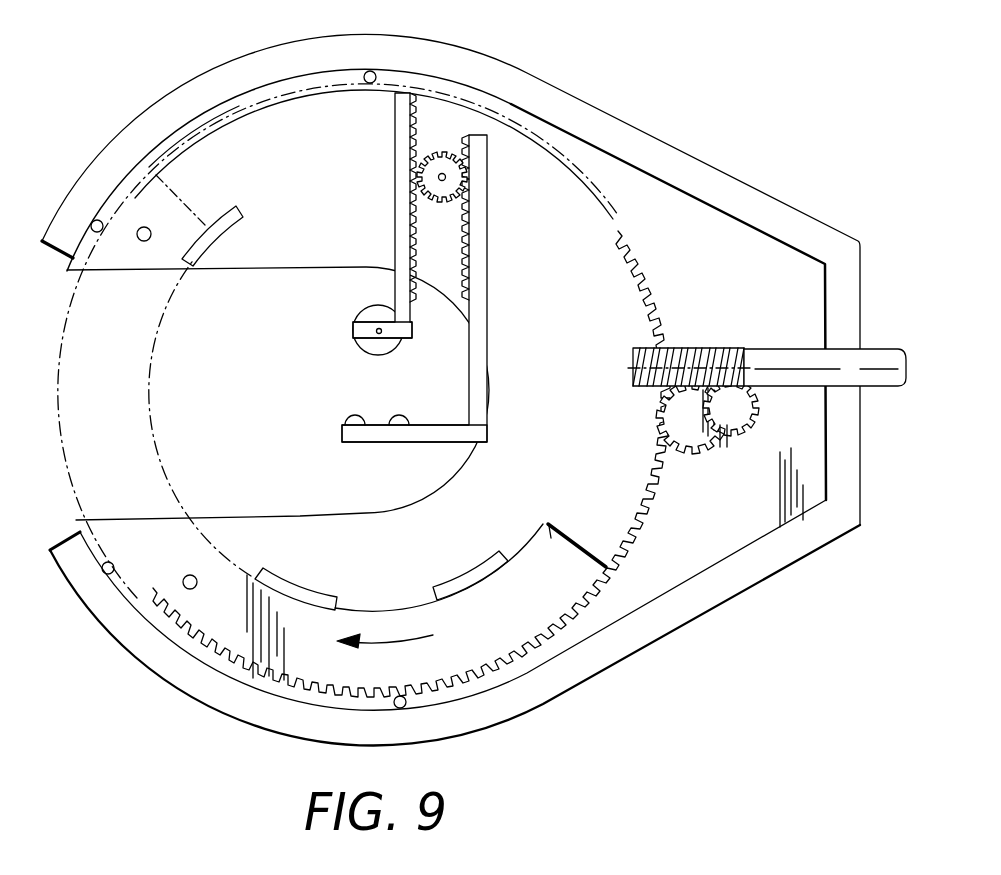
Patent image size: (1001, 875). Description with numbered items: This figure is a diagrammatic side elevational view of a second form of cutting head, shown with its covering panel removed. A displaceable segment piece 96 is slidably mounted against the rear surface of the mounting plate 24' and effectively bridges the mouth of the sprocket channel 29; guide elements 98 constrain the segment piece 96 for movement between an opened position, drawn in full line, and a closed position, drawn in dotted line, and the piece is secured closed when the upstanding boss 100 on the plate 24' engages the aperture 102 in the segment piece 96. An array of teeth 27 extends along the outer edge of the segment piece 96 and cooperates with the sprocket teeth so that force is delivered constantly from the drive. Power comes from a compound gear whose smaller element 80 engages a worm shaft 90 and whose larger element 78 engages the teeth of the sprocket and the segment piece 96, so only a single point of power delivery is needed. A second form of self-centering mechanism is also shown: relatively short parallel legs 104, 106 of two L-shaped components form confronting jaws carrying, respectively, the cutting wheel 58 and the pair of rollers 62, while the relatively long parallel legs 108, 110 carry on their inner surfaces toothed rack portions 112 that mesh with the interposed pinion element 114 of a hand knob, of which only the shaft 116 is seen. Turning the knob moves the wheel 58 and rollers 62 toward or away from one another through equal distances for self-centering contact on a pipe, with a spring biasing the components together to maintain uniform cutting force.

The mounting plate 24' is at (338, 331).
The array of teeth 27 is at (546, 638).
The sprocket channel 29 is at (276, 282).
The cutting wheel 58 is at (387, 352).
The rollers 62 is at (354, 413).
The larger element of compound gear 78 is at (750, 426).
The smaller element of compound gear 80 is at (708, 452).
The worm shaft 90 is at (768, 352).
The segment piece 96 is at (548, 522).
The guide elements 98 is at (246, 229).
The upstanding boss 100 is at (144, 227).
The aperture 102 is at (197, 577).
The short parallel leg 104 is at (353, 328).
The short parallel leg 106 is at (352, 432).
The long parallel leg 108 is at (402, 178).
The long parallel leg 110 is at (487, 333).
The toothed rack portions 112 is at (405, 110).
The pinion element 114 is at (458, 183).
The shaft 116 is at (441, 172).